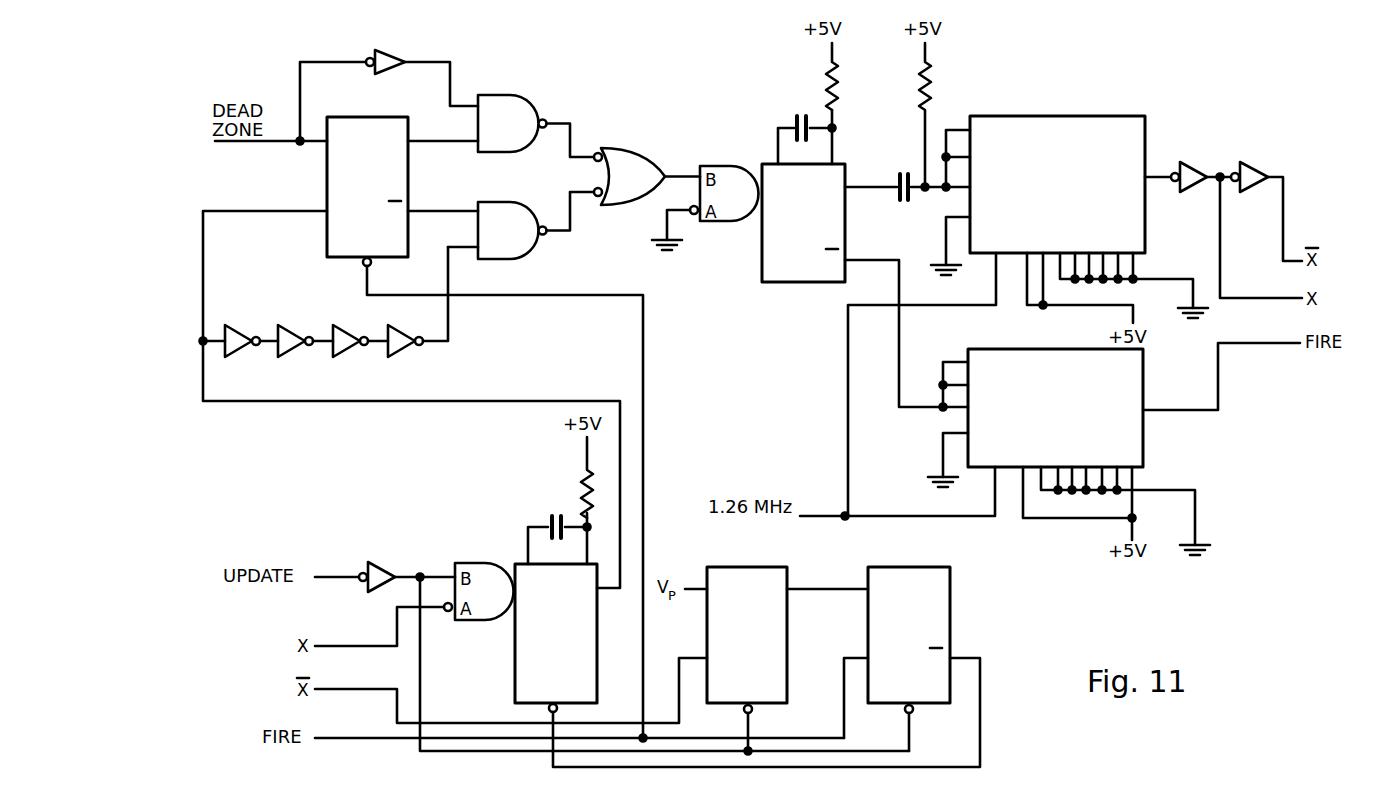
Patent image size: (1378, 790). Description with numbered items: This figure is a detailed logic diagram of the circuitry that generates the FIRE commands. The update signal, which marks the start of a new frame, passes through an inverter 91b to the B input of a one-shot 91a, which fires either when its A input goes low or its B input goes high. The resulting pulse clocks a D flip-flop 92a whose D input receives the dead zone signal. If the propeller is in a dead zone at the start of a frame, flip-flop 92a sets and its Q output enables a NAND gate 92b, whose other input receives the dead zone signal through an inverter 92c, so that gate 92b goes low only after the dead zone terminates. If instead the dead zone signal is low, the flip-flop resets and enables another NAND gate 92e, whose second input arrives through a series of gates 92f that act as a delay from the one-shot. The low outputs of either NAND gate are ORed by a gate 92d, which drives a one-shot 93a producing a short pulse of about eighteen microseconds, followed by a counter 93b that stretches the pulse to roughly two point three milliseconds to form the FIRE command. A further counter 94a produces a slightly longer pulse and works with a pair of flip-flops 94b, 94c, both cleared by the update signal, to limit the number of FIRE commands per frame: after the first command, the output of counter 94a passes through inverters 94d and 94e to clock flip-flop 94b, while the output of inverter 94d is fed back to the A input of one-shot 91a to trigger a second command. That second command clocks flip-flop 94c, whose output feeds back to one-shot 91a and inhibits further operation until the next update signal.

The one-shot 91a is at (517, 562).
The inverter 91b is at (378, 562).
The D flip-flop 92a is at (325, 225).
The NAND gate 92b is at (515, 94).
The inverter 92c is at (391, 52).
The OR gate 92d is at (638, 148).
The NAND gate 92e is at (535, 245).
The series of gates 92f is at (291, 353).
The one-shot 93a is at (760, 237).
The counter 93b is at (1057, 348).
The counter 94a is at (1095, 115).
The flip-flop 94b is at (743, 565).
The flip-flop 94c is at (897, 565).
The inverter 94d is at (1193, 160).
The inverter 94e is at (1257, 160).